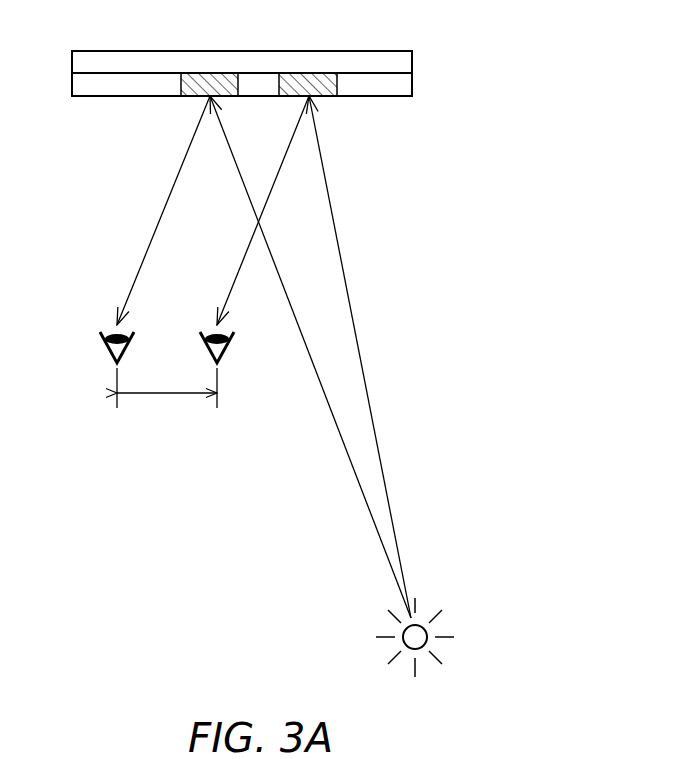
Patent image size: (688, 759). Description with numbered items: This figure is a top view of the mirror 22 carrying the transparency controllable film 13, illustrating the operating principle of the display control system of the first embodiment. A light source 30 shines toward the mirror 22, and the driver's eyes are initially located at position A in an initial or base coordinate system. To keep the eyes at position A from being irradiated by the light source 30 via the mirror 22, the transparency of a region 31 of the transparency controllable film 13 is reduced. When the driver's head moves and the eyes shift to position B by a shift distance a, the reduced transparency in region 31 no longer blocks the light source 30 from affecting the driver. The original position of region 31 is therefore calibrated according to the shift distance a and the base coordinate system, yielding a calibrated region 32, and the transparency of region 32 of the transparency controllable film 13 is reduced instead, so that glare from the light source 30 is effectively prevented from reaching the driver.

The mirror 22 is at (403, 62).
The transparency controllable film 13 is at (403, 86).
The region 31 is at (187, 92).
The region 32 is at (329, 92).
The light source 30 is at (421, 638).
The position A is at (100, 335).
The position B is at (234, 341).
The shift distance a is at (167, 394).